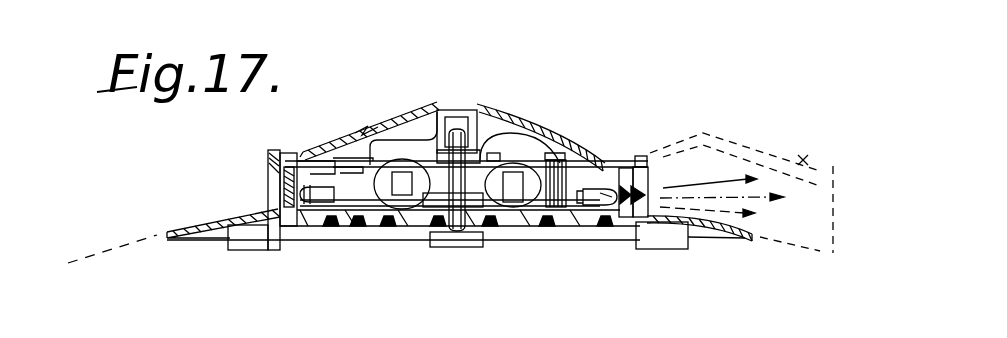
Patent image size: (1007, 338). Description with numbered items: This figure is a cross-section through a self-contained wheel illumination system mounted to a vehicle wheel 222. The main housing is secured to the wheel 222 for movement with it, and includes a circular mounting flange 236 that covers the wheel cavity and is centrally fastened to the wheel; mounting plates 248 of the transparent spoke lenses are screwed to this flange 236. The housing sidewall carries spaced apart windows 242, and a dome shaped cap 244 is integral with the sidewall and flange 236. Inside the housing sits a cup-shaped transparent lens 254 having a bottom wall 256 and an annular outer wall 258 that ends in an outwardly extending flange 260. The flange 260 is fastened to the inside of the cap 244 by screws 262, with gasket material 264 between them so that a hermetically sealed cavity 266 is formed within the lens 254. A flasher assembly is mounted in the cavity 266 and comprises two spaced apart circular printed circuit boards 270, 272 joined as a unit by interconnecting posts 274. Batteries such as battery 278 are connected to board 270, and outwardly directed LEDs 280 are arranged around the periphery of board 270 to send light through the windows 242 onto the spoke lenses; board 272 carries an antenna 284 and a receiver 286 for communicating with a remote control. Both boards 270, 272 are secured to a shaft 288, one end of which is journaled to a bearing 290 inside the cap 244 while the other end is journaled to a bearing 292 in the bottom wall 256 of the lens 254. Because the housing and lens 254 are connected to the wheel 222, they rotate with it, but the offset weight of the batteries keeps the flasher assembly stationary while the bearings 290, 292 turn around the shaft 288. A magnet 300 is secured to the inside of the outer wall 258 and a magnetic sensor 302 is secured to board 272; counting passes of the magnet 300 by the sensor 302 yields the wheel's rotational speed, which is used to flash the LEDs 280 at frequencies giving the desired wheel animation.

The vehicle wheel 222 is at (100, 247).
The circular mounting flange 236 is at (178, 227).
The windows 242 is at (282, 195).
The cap 244 is at (477, 120).
The mounting plates 248 is at (830, 122).
The cup-shaped transparent lens 254 is at (337, 232).
The bottom wall 256 is at (350, 222).
The annular outer wall 258 is at (293, 185).
The outwardly extending flange 260 is at (265, 175).
The screws 262 is at (287, 152).
The gasket material 264 is at (313, 152).
The hermetically sealed cavity 266 is at (620, 170).
The printed circuit board 270 is at (575, 208).
The printed circuit board 272 is at (540, 165).
The interconnecting posts 274 is at (560, 182).
The battery 278 is at (527, 190).
The LEDs 280 is at (312, 205).
The antenna 284 is at (410, 117).
The receiver 286 is at (494, 157).
The shaft 288 is at (480, 183).
The bearing 290 is at (440, 110).
The bearing 292 is at (460, 183).
The magnet 300 is at (288, 142).
The magnetic sensor 302 is at (342, 126).